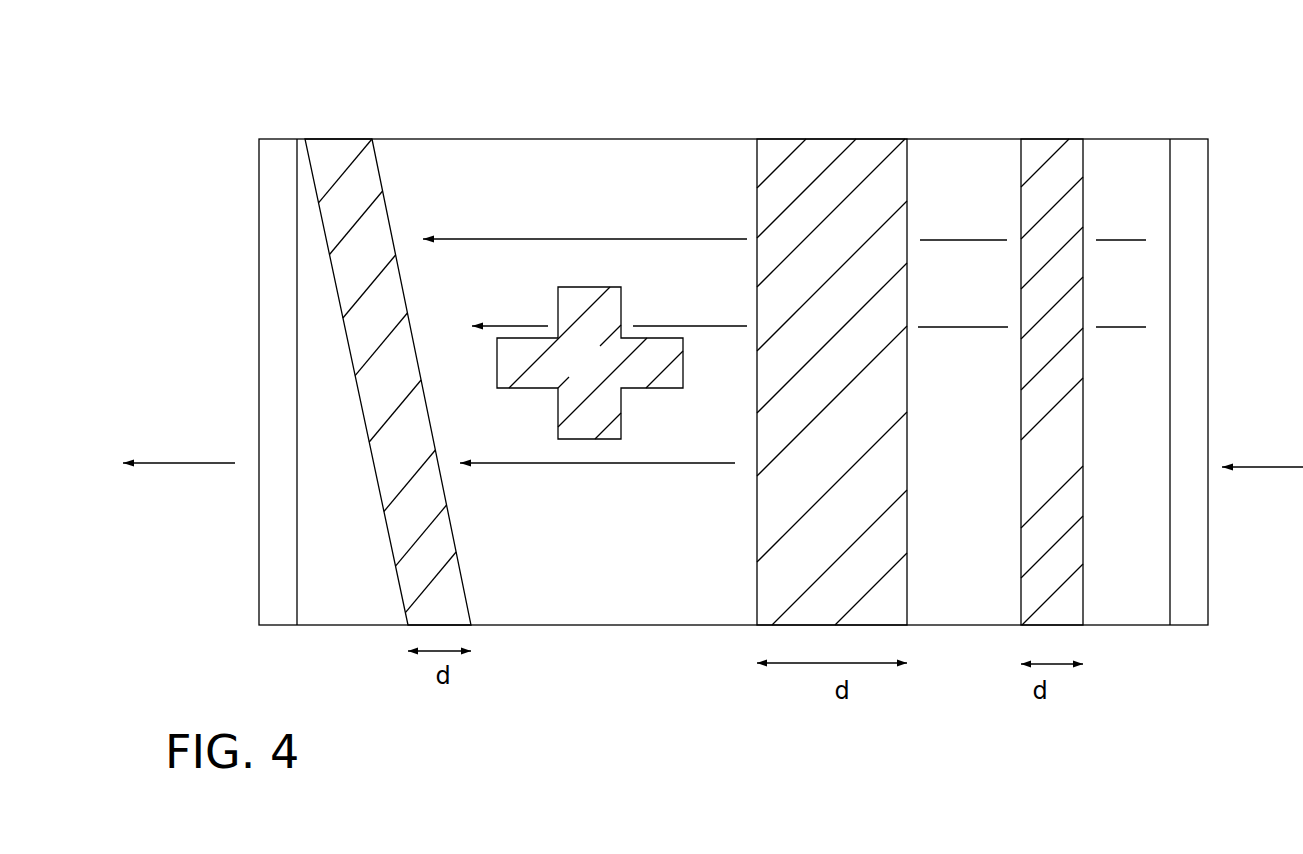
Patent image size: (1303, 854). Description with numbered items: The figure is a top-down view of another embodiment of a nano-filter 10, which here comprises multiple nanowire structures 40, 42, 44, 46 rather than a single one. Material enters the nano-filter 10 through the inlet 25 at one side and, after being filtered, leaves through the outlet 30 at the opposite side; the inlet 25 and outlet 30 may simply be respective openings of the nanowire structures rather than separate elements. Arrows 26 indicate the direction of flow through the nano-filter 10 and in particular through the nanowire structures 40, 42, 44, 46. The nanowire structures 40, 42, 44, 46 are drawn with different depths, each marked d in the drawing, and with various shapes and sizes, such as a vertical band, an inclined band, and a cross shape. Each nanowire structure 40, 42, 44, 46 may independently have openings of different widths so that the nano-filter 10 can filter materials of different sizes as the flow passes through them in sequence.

The nano-filter 10 is at (936, 112).
The inlet 25 is at (1200, 388).
The arrows 26 is at (713, 342).
The outlet 30 is at (288, 388).
The nanowire structure 40 is at (1061, 465).
The nanowire structure 42 is at (836, 465).
The nanowire structure 44 is at (601, 375).
The nanowire structure 46 is at (400, 388).